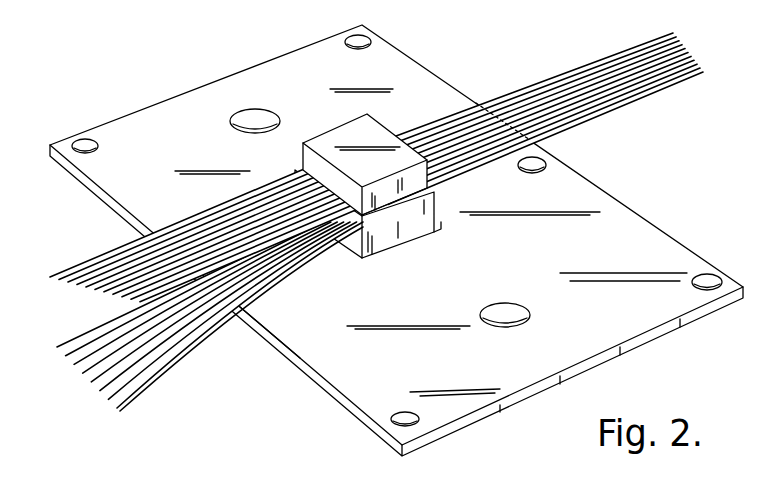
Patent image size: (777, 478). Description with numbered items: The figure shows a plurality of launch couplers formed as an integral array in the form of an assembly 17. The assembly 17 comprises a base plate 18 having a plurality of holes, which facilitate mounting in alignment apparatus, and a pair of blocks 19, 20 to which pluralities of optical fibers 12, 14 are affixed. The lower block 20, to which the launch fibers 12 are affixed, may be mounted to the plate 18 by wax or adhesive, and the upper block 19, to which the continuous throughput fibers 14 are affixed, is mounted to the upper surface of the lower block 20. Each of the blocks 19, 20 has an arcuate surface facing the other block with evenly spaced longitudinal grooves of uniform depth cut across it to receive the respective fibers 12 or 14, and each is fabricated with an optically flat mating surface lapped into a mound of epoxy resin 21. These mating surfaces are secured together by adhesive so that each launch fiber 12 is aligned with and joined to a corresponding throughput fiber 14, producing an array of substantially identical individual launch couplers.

The launch fibers 12 is at (170, 330).
The continuous throughput fibers 14 is at (542, 87).
The assembly 17 is at (280, 370).
The base plate 18 is at (614, 256).
The upper block 19 is at (372, 173).
The lower block 20 is at (425, 220).
The mound of epoxy resin 21 is at (428, 193).